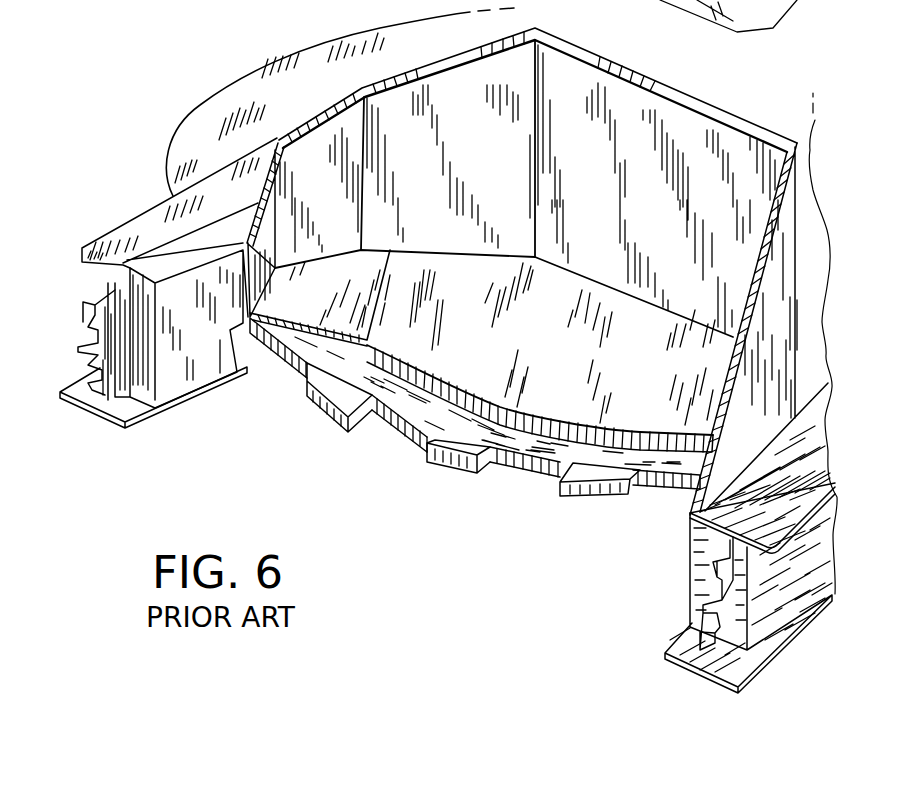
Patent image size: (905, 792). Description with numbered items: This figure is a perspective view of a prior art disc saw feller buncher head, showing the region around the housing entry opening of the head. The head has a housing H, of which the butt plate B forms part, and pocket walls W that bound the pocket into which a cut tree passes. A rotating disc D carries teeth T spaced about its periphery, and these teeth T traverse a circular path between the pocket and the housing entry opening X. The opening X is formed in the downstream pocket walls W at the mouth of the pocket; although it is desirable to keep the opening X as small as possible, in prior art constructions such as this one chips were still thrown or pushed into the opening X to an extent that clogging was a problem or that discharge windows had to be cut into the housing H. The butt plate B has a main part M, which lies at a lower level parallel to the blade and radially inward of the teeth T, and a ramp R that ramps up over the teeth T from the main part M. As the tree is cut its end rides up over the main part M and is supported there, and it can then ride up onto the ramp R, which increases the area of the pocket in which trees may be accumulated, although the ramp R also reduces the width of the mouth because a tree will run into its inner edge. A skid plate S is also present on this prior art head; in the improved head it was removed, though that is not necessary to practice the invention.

The housing H is at (298, 50).
The pocket walls W is at (695, 97).
The ramp R is at (322, 296).
The main part of the butt plate M is at (553, 359).
The butt plate B is at (421, 398).
The disc D is at (530, 473).
The teeth T is at (307, 397).
The entry opening X is at (247, 340).
The skid plate S is at (105, 400).